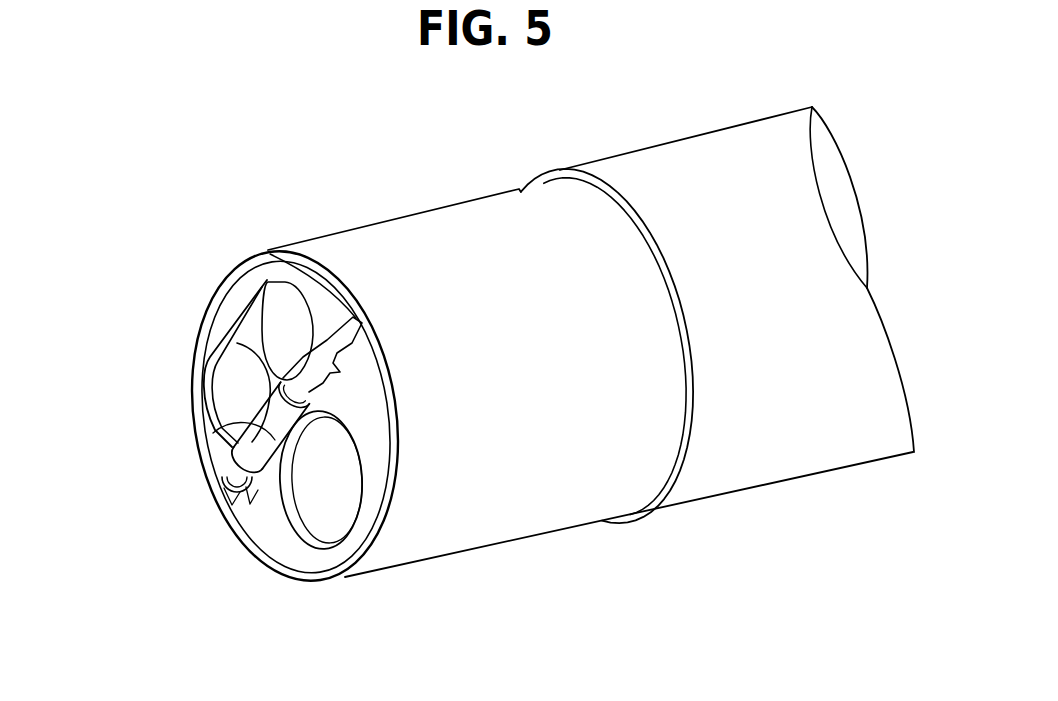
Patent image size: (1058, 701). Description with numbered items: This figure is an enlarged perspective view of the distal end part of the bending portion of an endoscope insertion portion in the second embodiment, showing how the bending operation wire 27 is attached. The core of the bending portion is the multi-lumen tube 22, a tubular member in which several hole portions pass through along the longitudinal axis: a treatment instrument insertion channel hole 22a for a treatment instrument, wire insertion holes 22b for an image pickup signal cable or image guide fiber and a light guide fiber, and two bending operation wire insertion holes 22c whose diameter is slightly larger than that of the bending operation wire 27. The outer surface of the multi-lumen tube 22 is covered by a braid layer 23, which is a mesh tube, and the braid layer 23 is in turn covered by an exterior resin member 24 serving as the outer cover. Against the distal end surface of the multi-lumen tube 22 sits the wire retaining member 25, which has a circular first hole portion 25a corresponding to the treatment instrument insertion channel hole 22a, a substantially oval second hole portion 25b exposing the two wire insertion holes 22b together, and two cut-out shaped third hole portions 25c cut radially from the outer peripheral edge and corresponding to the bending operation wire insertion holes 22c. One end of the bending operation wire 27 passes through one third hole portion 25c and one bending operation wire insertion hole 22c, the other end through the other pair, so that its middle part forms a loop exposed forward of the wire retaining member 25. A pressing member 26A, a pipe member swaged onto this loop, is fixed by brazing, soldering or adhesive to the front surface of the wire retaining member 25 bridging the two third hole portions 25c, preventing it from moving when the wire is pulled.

The multi-lumen tube 22 is at (247, 337).
The treatment instrument insertion channel hole 22a is at (322, 495).
The wire insertion holes 22b is at (245, 377).
The bending operation wire insertion holes 22c is at (332, 340).
The braid layer 23 is at (548, 497).
The exterior resin member 24 is at (760, 452).
The wire retaining member 25 is at (348, 552).
The first hole portion 25a is at (288, 524).
The second hole portion 25b is at (233, 330).
The third hole portions 25c is at (363, 324).
The pressing member 26A is at (216, 430).
The bending operation wire 27 is at (305, 302).